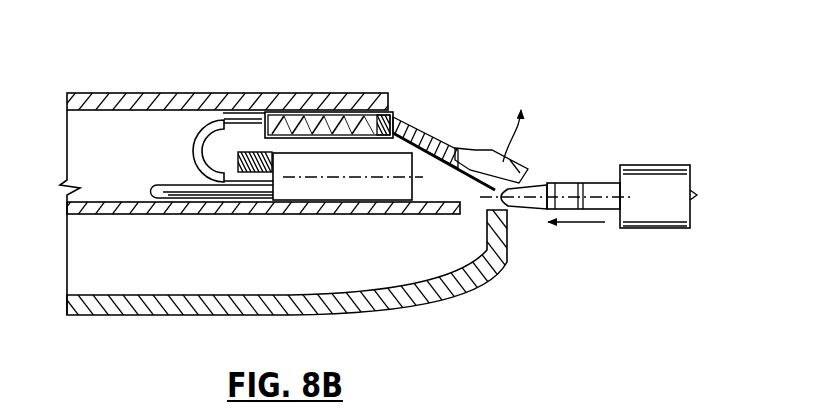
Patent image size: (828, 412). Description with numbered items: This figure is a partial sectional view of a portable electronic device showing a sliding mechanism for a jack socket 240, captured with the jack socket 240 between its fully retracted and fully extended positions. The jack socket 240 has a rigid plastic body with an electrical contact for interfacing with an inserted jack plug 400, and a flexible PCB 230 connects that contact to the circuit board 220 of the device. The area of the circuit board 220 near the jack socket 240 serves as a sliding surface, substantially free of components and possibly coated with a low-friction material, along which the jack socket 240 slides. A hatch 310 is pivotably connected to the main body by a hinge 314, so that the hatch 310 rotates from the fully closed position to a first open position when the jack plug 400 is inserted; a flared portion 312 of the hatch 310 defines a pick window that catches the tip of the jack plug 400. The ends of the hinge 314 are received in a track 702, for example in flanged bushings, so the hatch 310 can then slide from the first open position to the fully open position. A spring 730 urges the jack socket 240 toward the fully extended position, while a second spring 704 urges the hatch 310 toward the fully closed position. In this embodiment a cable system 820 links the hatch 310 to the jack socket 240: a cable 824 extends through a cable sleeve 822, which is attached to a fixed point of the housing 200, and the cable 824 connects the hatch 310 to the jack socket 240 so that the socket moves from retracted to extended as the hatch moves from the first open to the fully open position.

The housing 200 is at (88, 92).
The circuit board 220 is at (103, 215).
The flexible PCB 230 is at (137, 196).
The jack socket 240 is at (383, 193).
The hatch 310 is at (423, 137).
The flared portion 312 is at (503, 157).
The hinge 314 is at (395, 120).
The jack plug 400 is at (655, 163).
The track 702 is at (242, 113).
The spring 704 is at (283, 113).
The spring 730 is at (316, 118).
The cable system 820 is at (180, 158).
The cable sleeve 822 is at (193, 135).
The cable 824 is at (212, 122).